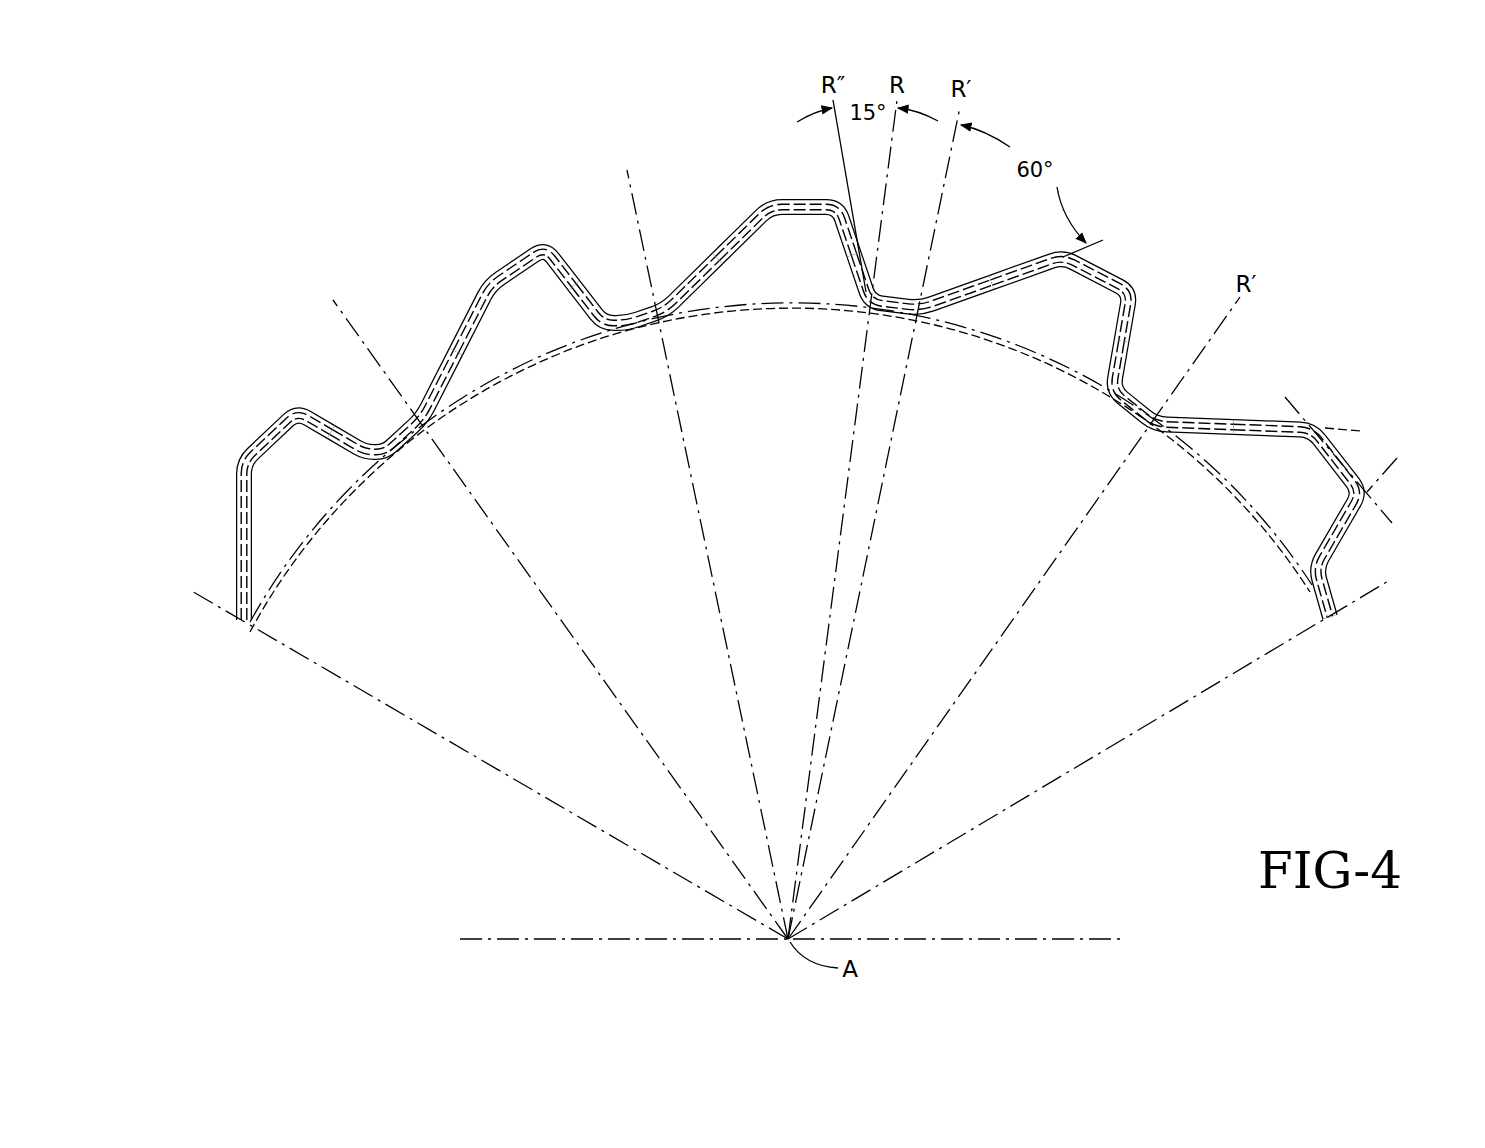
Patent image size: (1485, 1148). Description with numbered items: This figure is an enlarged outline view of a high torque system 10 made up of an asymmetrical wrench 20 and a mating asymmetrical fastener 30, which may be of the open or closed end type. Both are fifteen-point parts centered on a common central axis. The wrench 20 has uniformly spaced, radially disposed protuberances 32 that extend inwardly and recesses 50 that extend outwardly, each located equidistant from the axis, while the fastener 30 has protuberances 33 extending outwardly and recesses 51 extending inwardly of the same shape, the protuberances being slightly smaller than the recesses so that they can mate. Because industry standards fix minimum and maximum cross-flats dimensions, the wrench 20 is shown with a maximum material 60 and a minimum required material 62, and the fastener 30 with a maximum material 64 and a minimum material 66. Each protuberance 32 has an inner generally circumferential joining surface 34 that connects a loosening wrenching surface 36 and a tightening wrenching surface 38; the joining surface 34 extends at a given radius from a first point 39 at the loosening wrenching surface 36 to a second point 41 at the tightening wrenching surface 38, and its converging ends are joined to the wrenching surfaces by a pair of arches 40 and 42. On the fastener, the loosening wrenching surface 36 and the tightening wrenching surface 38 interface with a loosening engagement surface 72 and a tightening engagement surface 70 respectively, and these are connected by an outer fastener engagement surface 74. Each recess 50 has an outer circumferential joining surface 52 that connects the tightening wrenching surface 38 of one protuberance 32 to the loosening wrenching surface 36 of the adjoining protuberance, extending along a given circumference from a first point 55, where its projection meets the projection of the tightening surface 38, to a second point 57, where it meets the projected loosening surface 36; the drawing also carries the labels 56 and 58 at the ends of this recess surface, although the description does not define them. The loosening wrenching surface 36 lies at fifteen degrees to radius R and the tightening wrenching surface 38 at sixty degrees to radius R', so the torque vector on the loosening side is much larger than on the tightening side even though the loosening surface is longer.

The high torque system 10 is at (1318, 240).
The asymmetrical wrench 20 is at (360, 238).
The asymmetrical fastener 30 is at (529, 436).
The protuberance 32 is at (345, 398).
The protuberance 33 is at (279, 486).
The inner generally circumferential joining surface 34 is at (897, 316).
The loosening wrenching surface 36 is at (857, 240).
The tightening wrenching surface 38 is at (998, 276).
The first point 39 is at (861, 298).
The arch 40 is at (869, 293).
The second point 41 is at (927, 308).
The arch 42 is at (915, 301).
The recess 50 is at (226, 414).
The recess 51 is at (399, 483).
The outer circumferential joining surface 52 is at (1097, 266).
The first point 55 is at (1318, 427).
The leading surface 56 is at (1062, 254).
The second point 57 is at (1367, 490).
The trailing surface 58 is at (1136, 292).
The maximum material 60 is at (242, 568).
The minimum required material 62 is at (236, 505).
The maximum material 64 is at (248, 525).
The minimum material 66 is at (252, 565).
The tightening engagement surface 70 is at (701, 283).
The loosening engagement surface 72 is at (848, 261).
The outer fastener engagement surface 74 is at (795, 218).